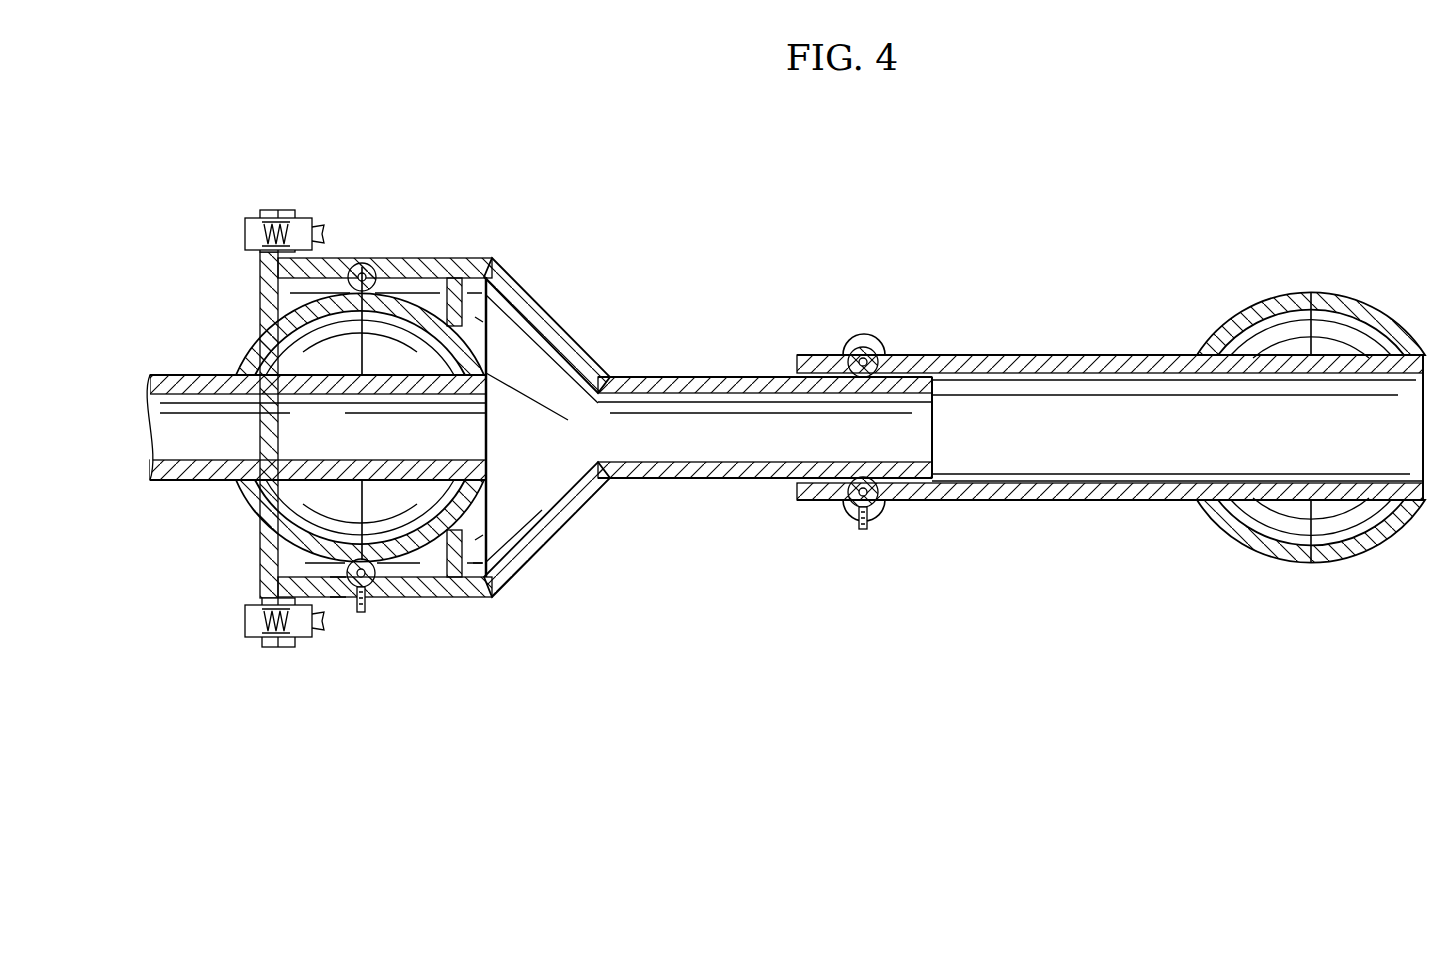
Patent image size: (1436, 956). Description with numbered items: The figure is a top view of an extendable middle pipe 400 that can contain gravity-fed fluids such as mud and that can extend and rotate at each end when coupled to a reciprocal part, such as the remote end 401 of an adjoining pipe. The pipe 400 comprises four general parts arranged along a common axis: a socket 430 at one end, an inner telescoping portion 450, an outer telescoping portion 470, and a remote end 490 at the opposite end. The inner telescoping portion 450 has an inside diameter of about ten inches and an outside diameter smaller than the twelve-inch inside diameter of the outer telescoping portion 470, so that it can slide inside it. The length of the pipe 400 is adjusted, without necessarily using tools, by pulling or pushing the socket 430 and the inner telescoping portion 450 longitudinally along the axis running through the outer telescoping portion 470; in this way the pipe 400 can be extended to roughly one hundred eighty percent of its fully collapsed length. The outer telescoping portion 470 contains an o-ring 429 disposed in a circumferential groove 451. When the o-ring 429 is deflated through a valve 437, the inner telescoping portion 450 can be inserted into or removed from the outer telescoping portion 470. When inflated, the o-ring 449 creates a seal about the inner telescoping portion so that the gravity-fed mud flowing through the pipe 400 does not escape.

The extendable middle pipe 400 is at (1423, 135).
The remote end 401 is at (340, 442).
The o-ring 429 is at (337, 587).
The socket 430 is at (607, 200).
The valve 437 is at (367, 602).
The o-ring 449 is at (857, 346).
The inner telescoping portion 450 is at (608, 292).
The circumferential groove 451 is at (870, 346).
The outer telescoping portion 470 is at (795, 530).
The remote end 490 is at (1198, 571).